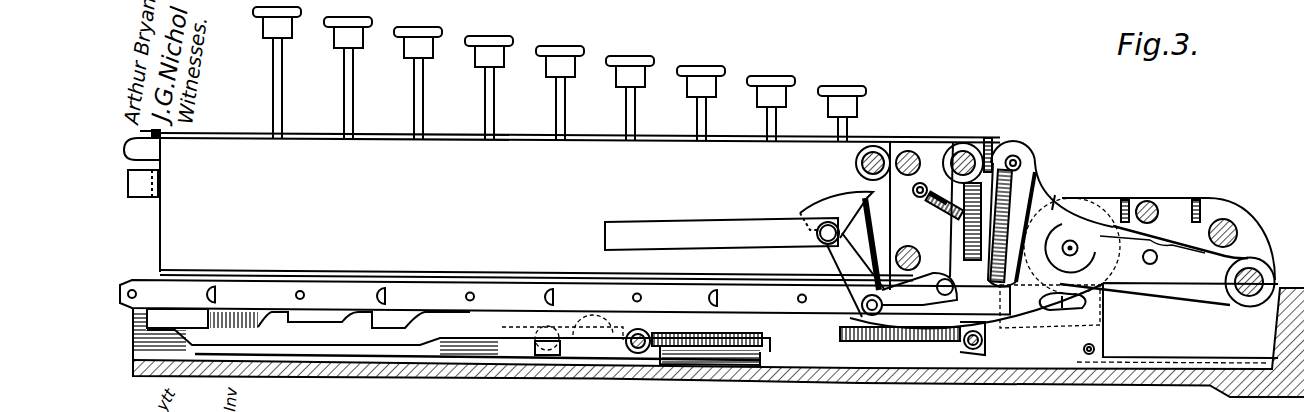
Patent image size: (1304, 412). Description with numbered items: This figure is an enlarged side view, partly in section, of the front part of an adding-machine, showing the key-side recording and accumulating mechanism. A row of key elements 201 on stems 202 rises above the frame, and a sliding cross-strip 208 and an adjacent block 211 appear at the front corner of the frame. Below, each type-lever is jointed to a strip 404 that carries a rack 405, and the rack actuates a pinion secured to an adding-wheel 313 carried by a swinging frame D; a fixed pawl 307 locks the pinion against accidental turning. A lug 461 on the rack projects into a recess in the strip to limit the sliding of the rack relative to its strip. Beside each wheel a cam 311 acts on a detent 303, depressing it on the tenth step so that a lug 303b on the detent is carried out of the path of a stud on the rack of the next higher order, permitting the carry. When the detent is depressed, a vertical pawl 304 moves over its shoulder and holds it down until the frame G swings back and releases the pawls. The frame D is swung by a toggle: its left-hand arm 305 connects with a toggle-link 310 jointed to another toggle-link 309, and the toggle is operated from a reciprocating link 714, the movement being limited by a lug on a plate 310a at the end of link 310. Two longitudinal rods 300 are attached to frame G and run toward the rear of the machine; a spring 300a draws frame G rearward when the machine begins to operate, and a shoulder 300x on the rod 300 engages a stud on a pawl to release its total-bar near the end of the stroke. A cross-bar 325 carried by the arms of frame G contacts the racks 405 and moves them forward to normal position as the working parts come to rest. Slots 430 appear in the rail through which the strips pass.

The keys 201 is at (480, 35).
The key stems 202 is at (342, 103).
The sliding cross-strip 208 is at (165, 147).
The block 211 is at (158, 190).
The reciprocating link 714 is at (604, 224).
The toggle-link 309 is at (856, 170).
The toggle-link 310 is at (833, 256).
The plate 310a is at (810, 212).
The detent 303 is at (946, 270).
The vertical pawl 304 is at (1028, 161).
The adding-wheels 313 is at (1057, 205).
The cam 311 is at (1083, 227).
The fixed pawl 307 is at (1182, 200).
The left-hand arm 305 is at (919, 297).
The cross-bar 325 is at (932, 330).
The lug 461 is at (1050, 319).
The lug 303b is at (1090, 304).
The rack 405 is at (1106, 335).
The longitudinal rod 300 is at (785, 317).
The shoulder 300x is at (283, 324).
The spring 300a is at (452, 386).
The rail slots 430 is at (294, 293).
The strip 404 is at (393, 294).